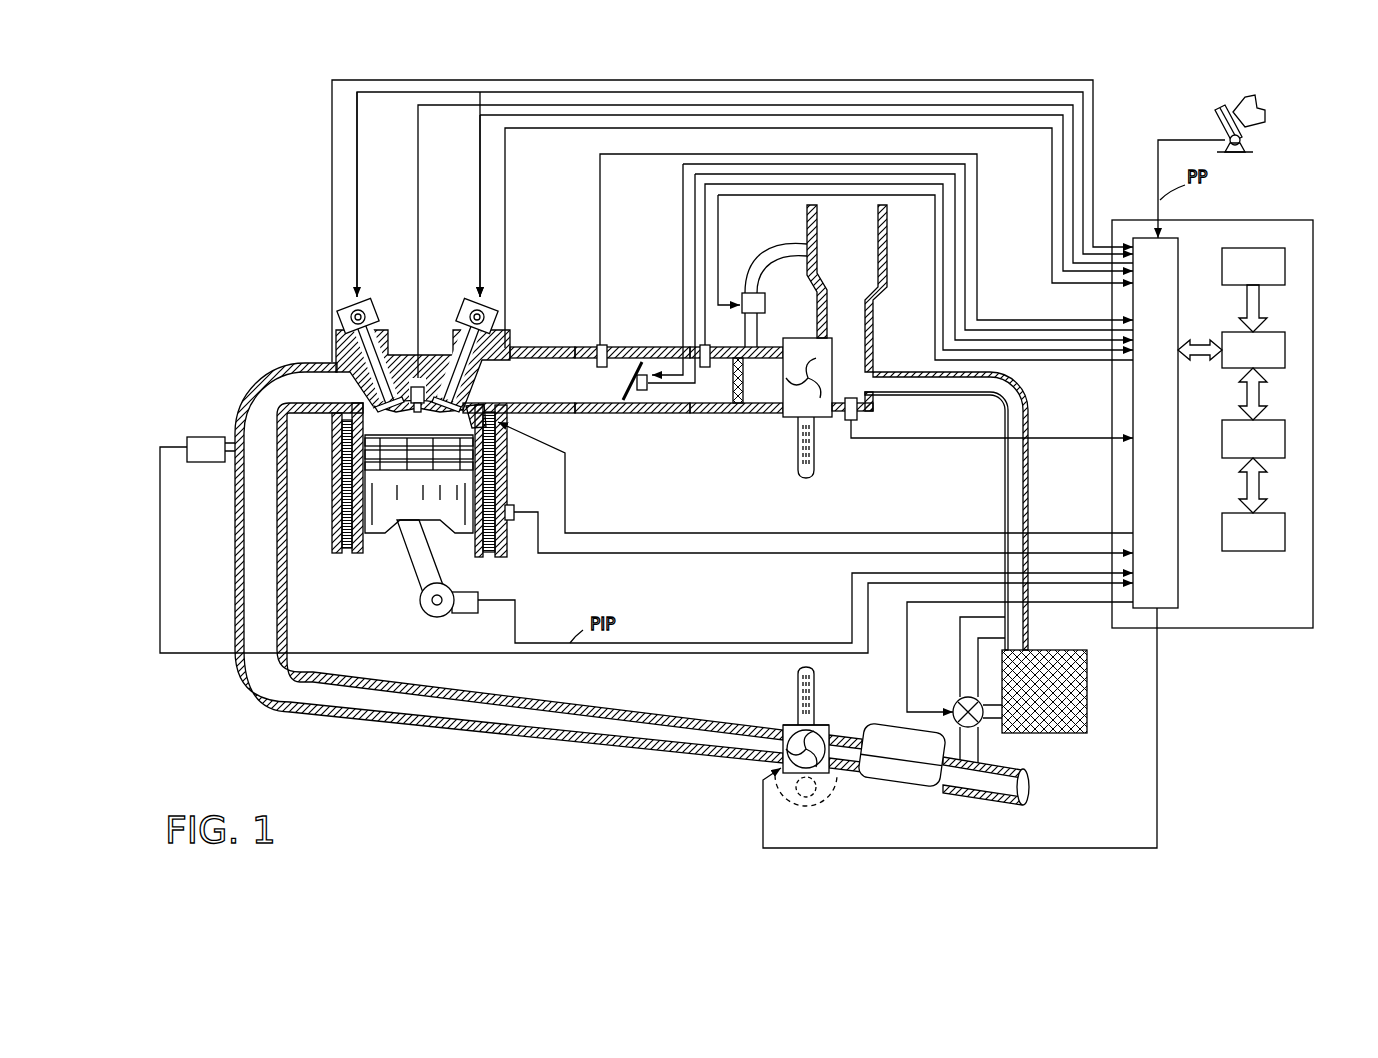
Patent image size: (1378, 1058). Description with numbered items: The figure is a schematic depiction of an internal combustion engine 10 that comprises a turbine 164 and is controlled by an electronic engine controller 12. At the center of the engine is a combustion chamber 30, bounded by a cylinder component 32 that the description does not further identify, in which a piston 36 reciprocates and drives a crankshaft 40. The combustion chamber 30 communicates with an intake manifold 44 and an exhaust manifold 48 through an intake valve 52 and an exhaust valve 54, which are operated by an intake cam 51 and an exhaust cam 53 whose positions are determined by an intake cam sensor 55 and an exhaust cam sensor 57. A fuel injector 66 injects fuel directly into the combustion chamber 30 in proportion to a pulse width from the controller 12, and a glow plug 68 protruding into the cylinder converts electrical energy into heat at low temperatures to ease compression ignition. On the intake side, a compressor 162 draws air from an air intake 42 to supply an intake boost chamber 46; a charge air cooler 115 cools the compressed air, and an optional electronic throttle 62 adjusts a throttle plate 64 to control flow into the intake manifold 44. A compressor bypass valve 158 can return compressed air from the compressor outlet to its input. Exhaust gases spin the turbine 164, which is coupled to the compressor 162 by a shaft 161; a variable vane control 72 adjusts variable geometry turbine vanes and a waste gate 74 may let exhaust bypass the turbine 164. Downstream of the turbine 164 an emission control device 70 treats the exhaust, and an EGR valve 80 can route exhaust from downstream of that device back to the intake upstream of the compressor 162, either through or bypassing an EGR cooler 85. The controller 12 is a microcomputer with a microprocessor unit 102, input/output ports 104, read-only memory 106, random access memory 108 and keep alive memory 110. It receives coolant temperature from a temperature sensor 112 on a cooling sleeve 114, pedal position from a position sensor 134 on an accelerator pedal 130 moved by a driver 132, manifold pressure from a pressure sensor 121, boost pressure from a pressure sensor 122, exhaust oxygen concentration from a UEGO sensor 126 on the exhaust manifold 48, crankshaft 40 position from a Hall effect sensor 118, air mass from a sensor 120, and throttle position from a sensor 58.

The internal combustion engine 10 is at (272, 292).
The electronic engine controller 12 is at (1282, 222).
The combustion chamber 30 is at (417, 420).
The cylinder walls 32 is at (366, 550).
The piston 36 is at (404, 512).
The crankshaft 40 is at (424, 615).
The air intake 42 is at (857, 276).
The intake manifold 44 is at (562, 394).
The intake boost chamber 46 is at (722, 394).
The exhaust manifold 48 is at (312, 396).
The intake cam 51 is at (468, 300).
The intake valve 52 is at (460, 395).
The exhaust cam 53 is at (367, 300).
The exhaust valve 54 is at (380, 403).
The intake cam sensor 55 is at (490, 324).
The exhaust cam sensor 57 is at (345, 318).
The throttle position sensor 58 is at (650, 392).
The electronic throttle 62 is at (620, 347).
The throttle plate 64 is at (632, 362).
The fuel injector 66 is at (412, 378).
The glow plug 68 is at (503, 428).
The emission control device 70 is at (885, 785).
The variable vane control 72 is at (781, 765).
The waste gate 74 is at (806, 797).
The EGR valve 80 is at (958, 705).
The EGR cooler 85 is at (1088, 690).
The microprocessor unit 102 is at (1287, 345).
The input/output ports 104 is at (1181, 247).
The read-only memory 106 is at (1287, 262).
The random access memory 108 is at (1287, 435).
The keep alive memory 110 is at (1287, 522).
The temperature sensor 112 is at (512, 505).
The cooling sleeve 114 is at (342, 475).
The charge air cooler 115 is at (738, 404).
The Hall effect sensor 118 is at (470, 614).
The air mass sensor 120 is at (857, 418).
The pressure sensor 121 is at (600, 345).
The pressure sensor 122 is at (708, 346).
The UEGO sensor 126 is at (190, 437).
The accelerator pedal 130 is at (1217, 118).
The driver 132 is at (1268, 106).
The position sensor 134 is at (1248, 143).
The compressor bypass valve 158 is at (747, 292).
The shaft 161 is at (798, 462).
The compressor 162 is at (783, 415).
The turbine 164 is at (782, 726).